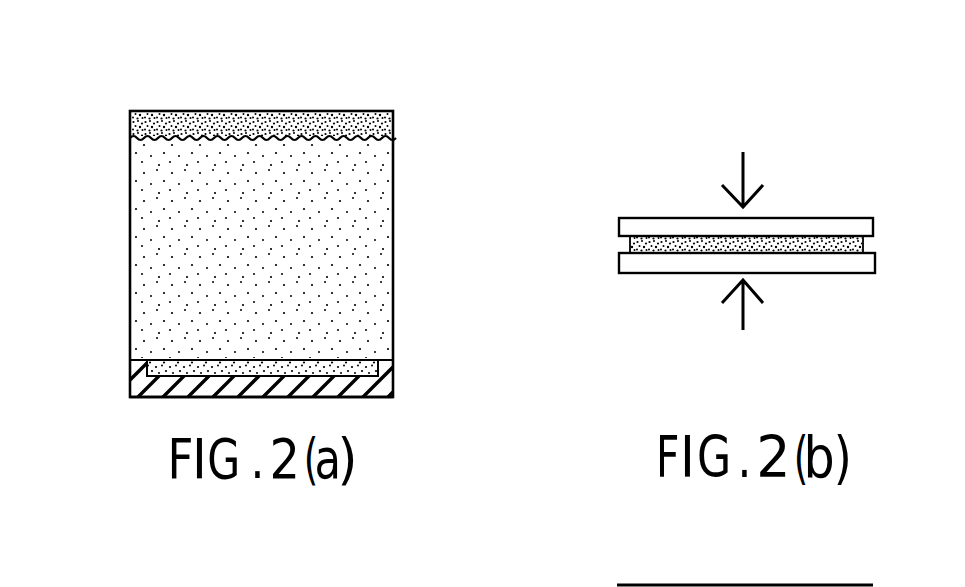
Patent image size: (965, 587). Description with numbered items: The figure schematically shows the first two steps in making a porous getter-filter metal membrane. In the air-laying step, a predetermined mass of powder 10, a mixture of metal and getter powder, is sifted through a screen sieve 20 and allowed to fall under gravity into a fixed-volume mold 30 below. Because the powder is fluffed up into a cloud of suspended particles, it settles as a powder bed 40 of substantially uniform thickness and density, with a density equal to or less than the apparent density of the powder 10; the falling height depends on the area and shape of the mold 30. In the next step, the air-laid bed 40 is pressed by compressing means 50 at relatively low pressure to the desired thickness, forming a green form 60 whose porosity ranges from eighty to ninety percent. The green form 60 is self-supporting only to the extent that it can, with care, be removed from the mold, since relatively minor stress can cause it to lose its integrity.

In FIG. 2A, the powder 10 is at (338, 111).
In FIG. 2B, the powder 10 is at (833, 585).
In FIG. 2A, the screen sieve 20 is at (393, 138).
In FIG. 2A, the mold 30 is at (397, 378).
In FIG. 2A, the powder bed 40 is at (358, 360).
In FIG. 2B, the compressing means 50 is at (807, 218).
In FIG. 2B, the green form 60 is at (863, 245).